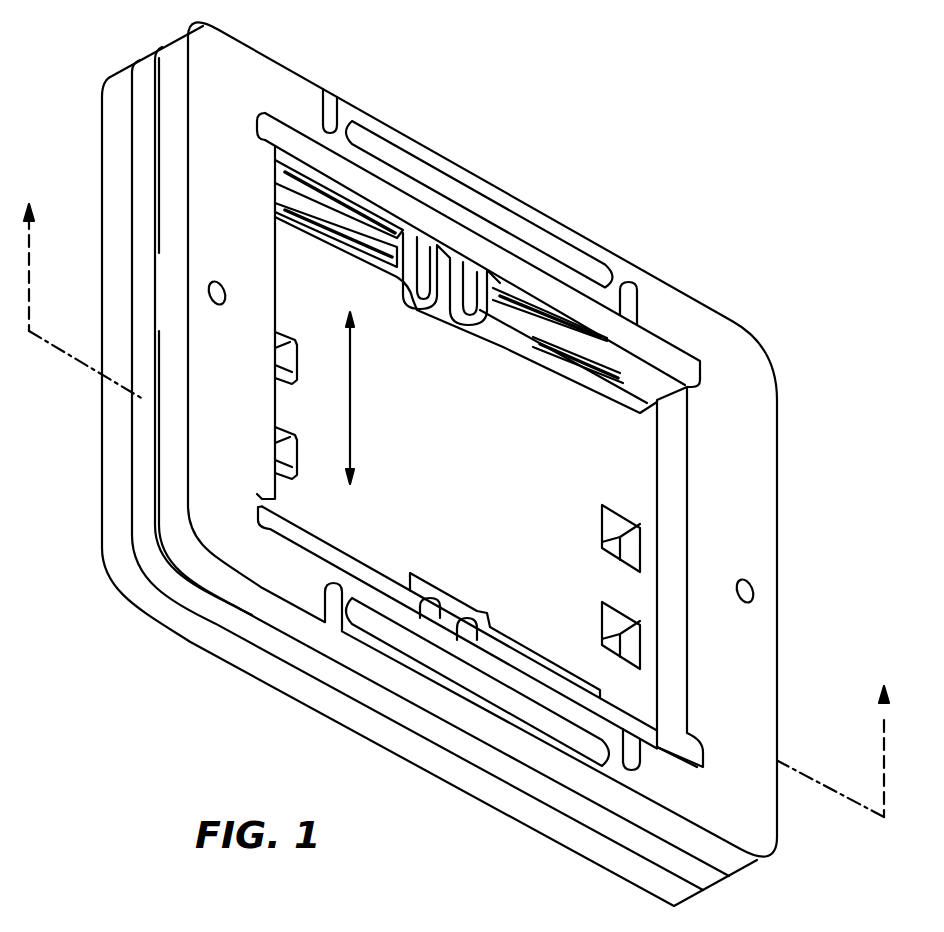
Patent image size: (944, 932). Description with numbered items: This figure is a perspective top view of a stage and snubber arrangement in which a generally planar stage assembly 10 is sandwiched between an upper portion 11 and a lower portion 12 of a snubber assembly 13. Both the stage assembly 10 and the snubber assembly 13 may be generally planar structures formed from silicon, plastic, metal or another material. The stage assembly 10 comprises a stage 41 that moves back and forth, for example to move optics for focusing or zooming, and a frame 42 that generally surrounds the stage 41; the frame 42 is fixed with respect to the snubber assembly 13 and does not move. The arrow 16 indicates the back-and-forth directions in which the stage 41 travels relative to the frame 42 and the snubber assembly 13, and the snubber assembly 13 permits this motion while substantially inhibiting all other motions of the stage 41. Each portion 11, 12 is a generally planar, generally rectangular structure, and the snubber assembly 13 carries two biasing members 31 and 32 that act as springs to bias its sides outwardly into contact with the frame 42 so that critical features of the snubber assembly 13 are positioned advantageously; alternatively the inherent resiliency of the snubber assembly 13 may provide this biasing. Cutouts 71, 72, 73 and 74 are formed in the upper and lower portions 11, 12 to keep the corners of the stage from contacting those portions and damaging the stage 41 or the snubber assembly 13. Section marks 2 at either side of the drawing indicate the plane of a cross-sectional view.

The section line 2- 2 is at (454, 494).
The stage assembly 10 is at (433, 464).
The upper portion of snubber assembly 11 is at (747, 423).
The lower portion of snubber assembly 12 is at (112, 524).
The snubber assembly 13 is at (433, 464).
The arrow 16 is at (357, 430).
The biasing member 31 is at (470, 412).
The biasing member 32 is at (483, 727).
The stage 41 is at (535, 549).
The frame 42 is at (433, 448).
The cutout 71 is at (257, 131).
The cutout 72 is at (713, 383).
The cutout 73 is at (257, 500).
The cutout 74 is at (707, 763).